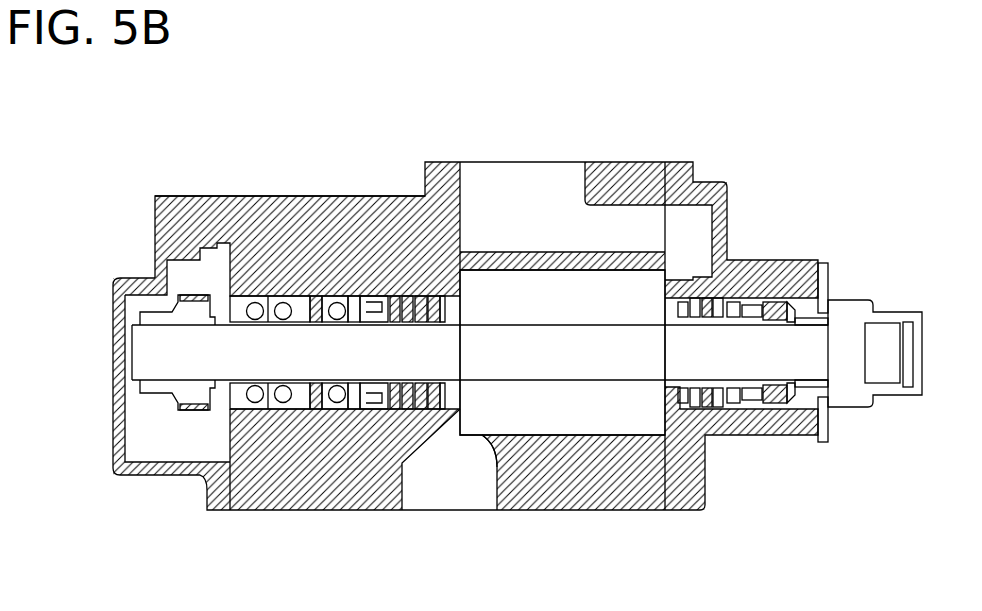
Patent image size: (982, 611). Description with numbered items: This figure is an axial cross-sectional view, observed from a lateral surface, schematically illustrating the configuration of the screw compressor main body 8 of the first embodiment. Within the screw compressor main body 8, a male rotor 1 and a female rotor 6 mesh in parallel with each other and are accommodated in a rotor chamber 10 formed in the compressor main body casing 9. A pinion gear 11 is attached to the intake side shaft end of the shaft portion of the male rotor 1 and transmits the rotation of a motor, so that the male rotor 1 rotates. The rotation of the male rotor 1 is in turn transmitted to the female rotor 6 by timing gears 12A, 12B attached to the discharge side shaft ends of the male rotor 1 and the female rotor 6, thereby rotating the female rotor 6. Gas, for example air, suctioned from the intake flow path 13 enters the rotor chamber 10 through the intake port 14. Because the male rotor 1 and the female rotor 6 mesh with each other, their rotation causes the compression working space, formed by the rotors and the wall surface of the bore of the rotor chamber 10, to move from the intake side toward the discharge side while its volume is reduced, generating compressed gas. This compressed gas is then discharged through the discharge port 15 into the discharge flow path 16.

The male rotor 1 is at (557, 402).
The female rotor 6 is at (562, 421).
The screw compressor main body 8 is at (272, 187).
The compressor main body casing 9 is at (363, 195).
The rotor chamber 10 is at (618, 437).
The pinion gear 11 is at (873, 400).
The timing gear 12A is at (193, 308).
The timing gear 12B is at (177, 273).
The intake flow path 13 is at (503, 200).
The intake port 14 is at (668, 280).
The discharge port 15 is at (473, 438).
The discharge flow path 16 is at (425, 470).